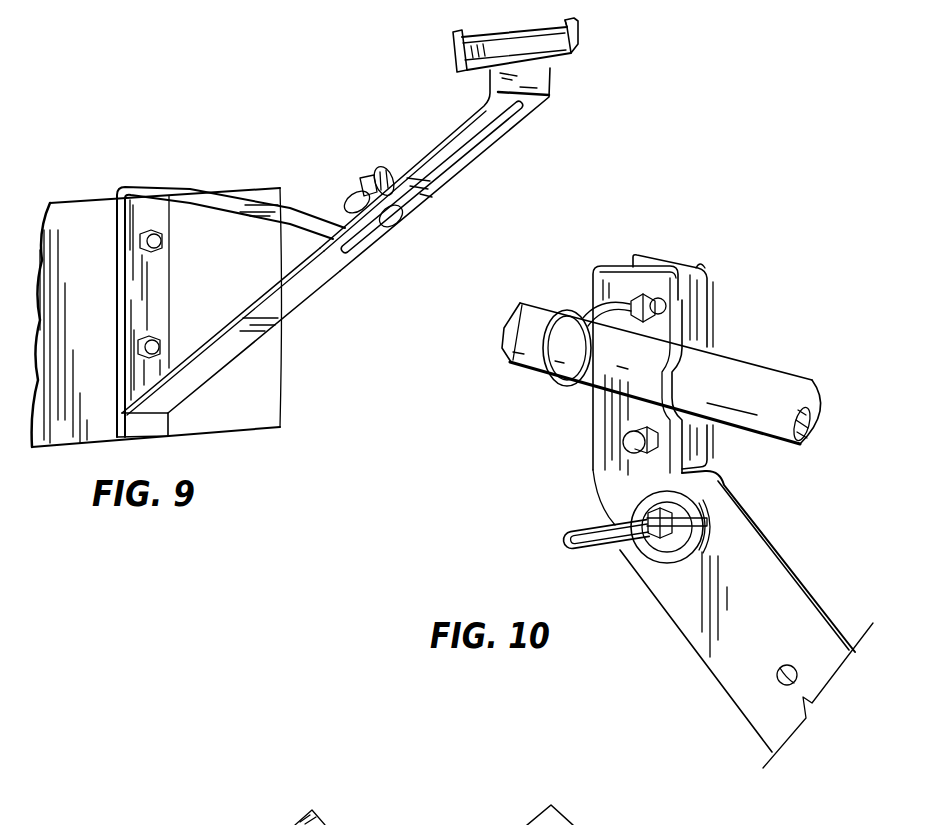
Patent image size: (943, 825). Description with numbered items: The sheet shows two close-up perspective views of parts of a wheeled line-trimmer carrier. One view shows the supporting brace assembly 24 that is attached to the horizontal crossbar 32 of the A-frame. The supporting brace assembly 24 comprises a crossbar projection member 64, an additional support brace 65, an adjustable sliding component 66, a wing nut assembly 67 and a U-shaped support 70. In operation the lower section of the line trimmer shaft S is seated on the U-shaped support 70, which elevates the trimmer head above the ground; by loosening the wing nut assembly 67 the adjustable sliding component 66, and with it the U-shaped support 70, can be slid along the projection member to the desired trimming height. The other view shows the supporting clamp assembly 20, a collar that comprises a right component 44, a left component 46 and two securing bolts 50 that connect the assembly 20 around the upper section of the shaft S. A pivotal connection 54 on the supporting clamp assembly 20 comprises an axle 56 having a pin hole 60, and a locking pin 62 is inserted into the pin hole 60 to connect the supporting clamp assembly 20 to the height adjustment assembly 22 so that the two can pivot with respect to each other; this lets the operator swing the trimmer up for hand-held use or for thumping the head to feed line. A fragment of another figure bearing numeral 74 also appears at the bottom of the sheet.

In FIG. 10, the supporting clamp assembly 20 is at (720, 235).
In FIG. 10, the height adjustment assembly 22 is at (687, 633).
In FIG. 9, the supporting brace assembly 24 is at (283, 121).
In FIG. 9, the crossbar 32 is at (66, 422).
In FIG. 10, the right component 44 is at (600, 410).
In FIG. 10, the left component 46 is at (704, 310).
In FIG. 10, the securing bolts 50 is at (632, 300).
In FIG. 10, the pivotal connection 54 is at (638, 567).
In FIG. 10, the axle 56 is at (633, 510).
In FIG. 10, the pin hole 60 is at (717, 530).
In FIG. 10, the locking pin 62 is at (570, 547).
In FIG. 9, the crossbar projection member 64 is at (205, 187).
In FIG. 9, the additional support brace 65 is at (197, 382).
In FIG. 9, the adjustable sliding component 66 is at (335, 257).
In FIG. 9, the wing nut assembly 67 is at (373, 172).
In FIG. 9, the U-shaped support 70 is at (455, 57).
In FIG. 10, the clip 74 is at (312, 815).
In FIG. 10, the shaft S is at (752, 372).